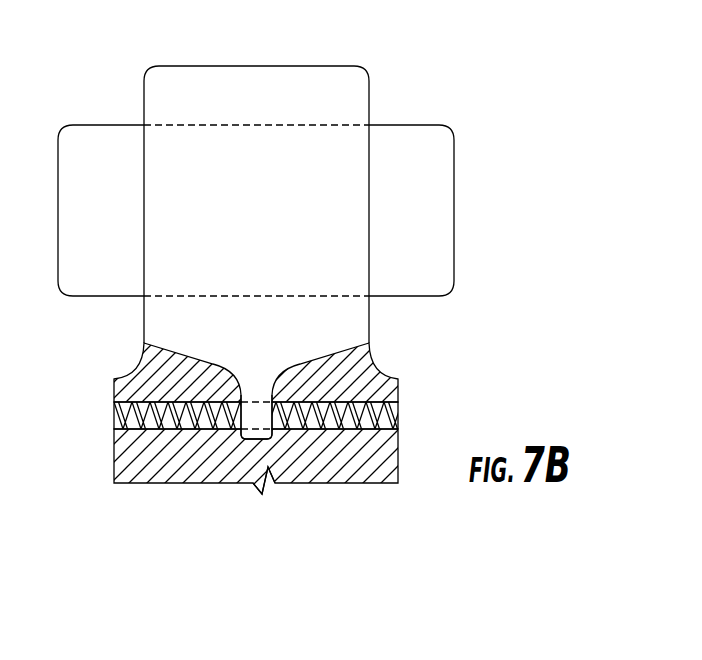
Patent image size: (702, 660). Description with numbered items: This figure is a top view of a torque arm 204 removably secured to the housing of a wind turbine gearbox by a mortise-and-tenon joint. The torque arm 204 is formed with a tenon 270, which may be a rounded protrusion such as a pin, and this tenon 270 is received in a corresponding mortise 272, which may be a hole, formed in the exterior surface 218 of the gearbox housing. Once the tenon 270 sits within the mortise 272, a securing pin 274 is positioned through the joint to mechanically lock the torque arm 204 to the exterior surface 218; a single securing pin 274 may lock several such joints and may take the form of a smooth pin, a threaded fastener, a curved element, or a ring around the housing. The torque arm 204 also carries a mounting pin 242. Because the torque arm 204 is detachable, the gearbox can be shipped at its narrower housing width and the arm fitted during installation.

The torque arm 204 is at (339, 93).
The mounting pin 242 is at (425, 210).
The securing pin 274 is at (295, 454).
The exterior surface 218 is at (330, 470).
The tenon 270 is at (248, 424).
The mortise 272 is at (254, 456).